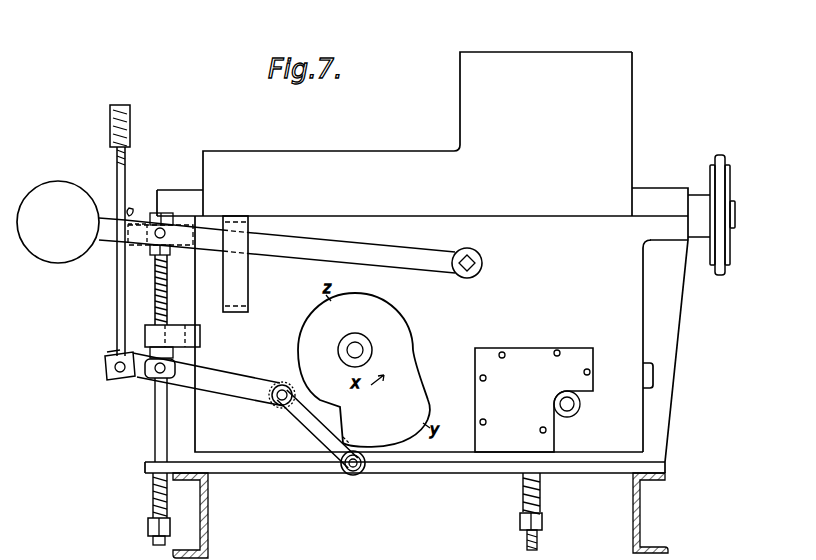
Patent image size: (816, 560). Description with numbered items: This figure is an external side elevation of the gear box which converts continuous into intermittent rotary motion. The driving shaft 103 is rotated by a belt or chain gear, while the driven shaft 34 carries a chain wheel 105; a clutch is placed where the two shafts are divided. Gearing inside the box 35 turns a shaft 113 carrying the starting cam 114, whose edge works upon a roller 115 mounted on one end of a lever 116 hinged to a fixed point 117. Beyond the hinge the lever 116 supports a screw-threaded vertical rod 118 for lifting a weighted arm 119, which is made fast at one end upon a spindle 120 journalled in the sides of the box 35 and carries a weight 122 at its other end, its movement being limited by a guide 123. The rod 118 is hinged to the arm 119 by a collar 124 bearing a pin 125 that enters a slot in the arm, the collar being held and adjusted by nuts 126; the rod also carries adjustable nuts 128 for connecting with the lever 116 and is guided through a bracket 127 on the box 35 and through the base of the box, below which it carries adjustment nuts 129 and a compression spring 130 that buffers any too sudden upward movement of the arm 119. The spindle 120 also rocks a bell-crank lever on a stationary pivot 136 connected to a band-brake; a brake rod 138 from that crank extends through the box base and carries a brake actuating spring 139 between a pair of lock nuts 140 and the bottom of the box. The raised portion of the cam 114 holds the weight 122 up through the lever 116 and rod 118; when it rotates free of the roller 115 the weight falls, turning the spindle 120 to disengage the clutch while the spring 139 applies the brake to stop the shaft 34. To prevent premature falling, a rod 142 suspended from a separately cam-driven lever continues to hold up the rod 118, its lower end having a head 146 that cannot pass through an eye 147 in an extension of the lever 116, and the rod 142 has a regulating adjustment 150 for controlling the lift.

The box 35 is at (477, 134).
The driven shaft 34 is at (736, 213).
The chain wheel 105 is at (720, 176).
The driving shaft 103 is at (142, 208).
The shaft 113 is at (348, 351).
The starting cam 114 is at (380, 333).
The roller 115 is at (360, 477).
The lever 116 is at (253, 383).
The fixed point 117 is at (272, 402).
The vertical rod 118 is at (168, 278).
The weighted arm 119 is at (294, 248).
The spindle 120 is at (478, 258).
The weight 122 is at (55, 254).
The guide 123 is at (240, 294).
The collar 124 is at (116, 249).
The pin 125 is at (170, 213).
The nuts 126 is at (157, 264).
The bracket 127 is at (180, 335).
The adjustable nuts 128 is at (187, 351).
The adjustment nuts 129 is at (148, 530).
The compression spring 130 is at (151, 493).
The stationary pivot 136 is at (573, 408).
The brake rod 138 is at (542, 499).
The brake actuating spring 139 is at (545, 483).
The lock nuts 140 is at (545, 528).
The rod 142 is at (113, 316).
The head 146 is at (106, 369).
The eye 147 is at (110, 355).
The regulating adjustment 150 is at (130, 120).